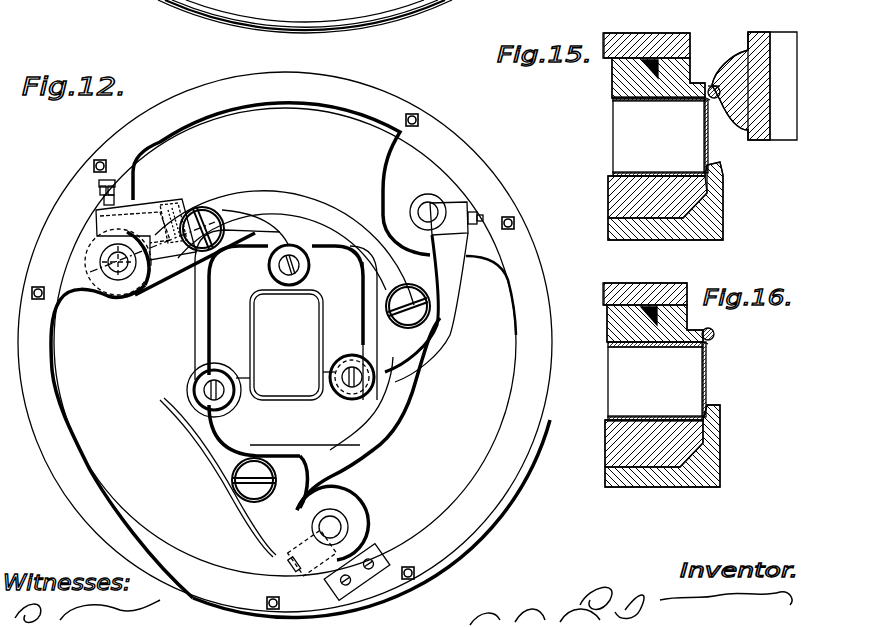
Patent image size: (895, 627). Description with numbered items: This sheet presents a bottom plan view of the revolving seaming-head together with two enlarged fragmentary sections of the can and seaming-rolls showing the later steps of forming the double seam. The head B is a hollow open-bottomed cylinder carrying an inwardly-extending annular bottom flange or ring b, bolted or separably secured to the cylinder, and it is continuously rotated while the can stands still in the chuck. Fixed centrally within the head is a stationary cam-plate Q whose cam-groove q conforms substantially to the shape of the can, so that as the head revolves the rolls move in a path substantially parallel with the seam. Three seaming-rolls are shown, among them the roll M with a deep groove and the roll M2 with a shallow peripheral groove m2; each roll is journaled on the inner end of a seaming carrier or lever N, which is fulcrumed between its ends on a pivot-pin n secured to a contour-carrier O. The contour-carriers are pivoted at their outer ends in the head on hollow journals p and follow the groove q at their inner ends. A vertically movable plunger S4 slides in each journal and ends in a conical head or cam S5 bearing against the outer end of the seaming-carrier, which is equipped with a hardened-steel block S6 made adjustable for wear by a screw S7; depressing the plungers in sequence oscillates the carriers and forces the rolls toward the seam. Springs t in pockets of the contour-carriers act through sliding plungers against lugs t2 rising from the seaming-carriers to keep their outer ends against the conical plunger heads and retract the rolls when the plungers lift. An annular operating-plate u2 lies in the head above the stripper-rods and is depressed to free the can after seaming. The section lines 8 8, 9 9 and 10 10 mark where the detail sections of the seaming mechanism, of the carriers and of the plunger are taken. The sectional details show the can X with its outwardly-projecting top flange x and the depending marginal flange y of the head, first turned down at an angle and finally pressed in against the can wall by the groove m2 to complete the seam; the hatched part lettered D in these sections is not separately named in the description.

In FIG. 12, the annular bottom flange or ring b is at (195, 102).
In FIG. 12, the revolving head B is at (274, 358).
In FIG. 12, the stationary cam-plate Q is at (362, 428).
In FIG. 12, the frame D is at (286, 343).
In FIG. 15, the frame D is at (676, 40).
In FIG. 16, the frame D is at (679, 290).
In FIG. 12, the cam-groove q is at (212, 346).
In FIG. 12, the hollow journals p is at (238, 378).
In FIG. 12, the plunger S4 is at (108, 262).
In FIG. 12, the conical head or cam S5 is at (112, 272).
In FIG. 12, the hardened-steel block S6 is at (95, 252).
In FIG. 12, the adjusting screw S7 is at (114, 188).
In FIG. 12, the section line 9 9 is at (165, 215).
In FIG. 12, the springs t is at (175, 215).
In FIG. 12, the lugs t2 is at (160, 290).
In FIG. 12, the section line 10 10 is at (100, 188).
In FIG. 12, the section line 8 8 is at (250, 222).
In FIG. 12, the seaming carrier or lever N is at (232, 210).
In FIG. 12, the pivot-pin n is at (224, 232).
In FIG. 12, the seaming-roll M is at (200, 390).
In FIG. 12, the third seaming-roll M2 is at (345, 390).
In FIG. 15, the third seaming-roll M2 is at (754, 70).
In FIG. 12, the contour-carrier O is at (258, 208).
In FIG. 12, the annular operating-plate u2 is at (334, 226).
In FIG. 15, the can X is at (660, 136).
In FIG. 16, the can X is at (657, 381).
In FIG. 15, the top flange of the can x is at (710, 82).
In FIG. 16, the top flange of the can x is at (716, 336).
In FIG. 15, the marginal flange of the head y is at (712, 98).
In FIG. 16, the marginal flange of the head y is at (708, 340).
In FIG. 15, the shallow peripheral groove m2 is at (718, 82).